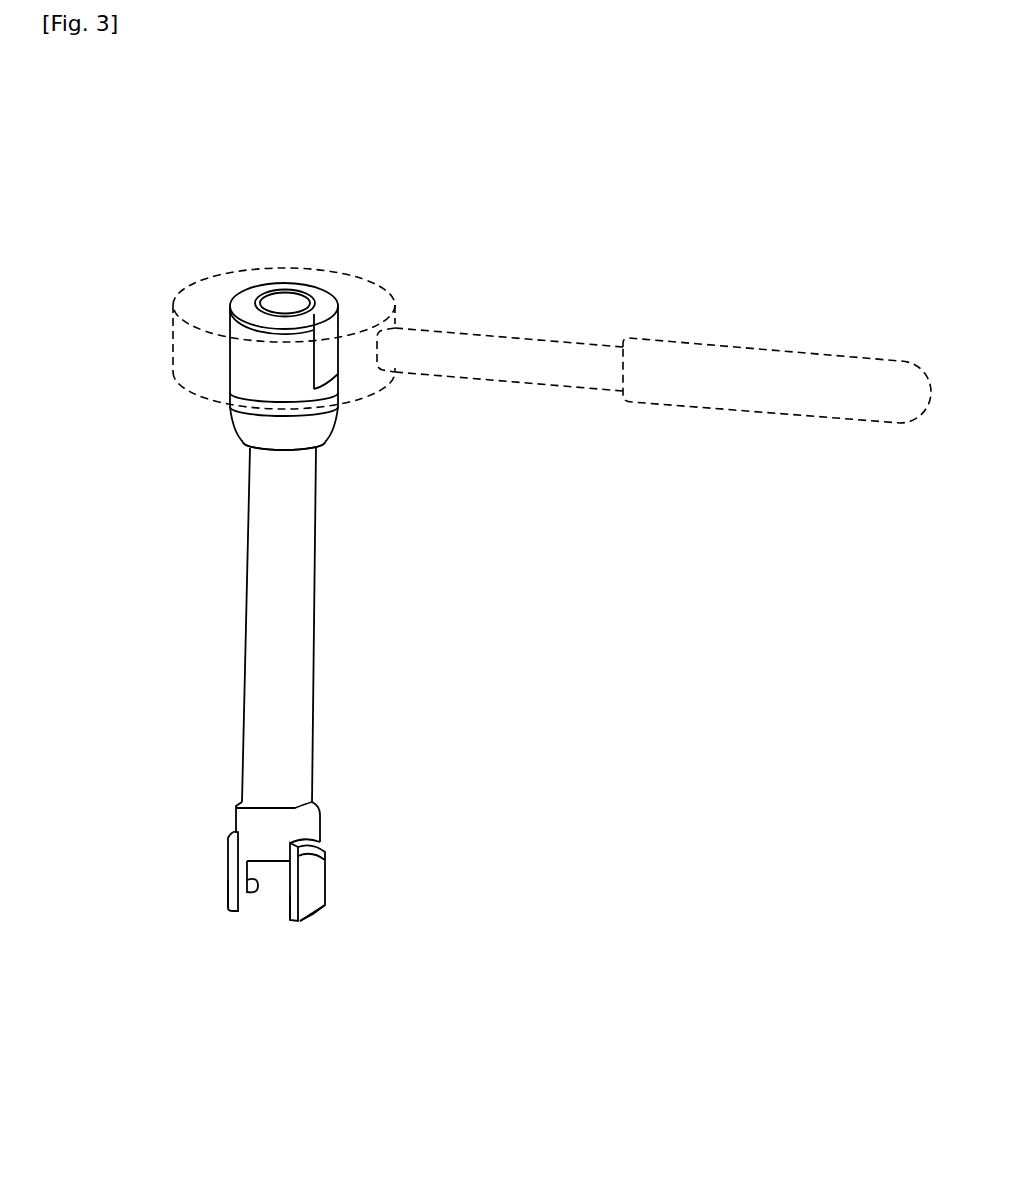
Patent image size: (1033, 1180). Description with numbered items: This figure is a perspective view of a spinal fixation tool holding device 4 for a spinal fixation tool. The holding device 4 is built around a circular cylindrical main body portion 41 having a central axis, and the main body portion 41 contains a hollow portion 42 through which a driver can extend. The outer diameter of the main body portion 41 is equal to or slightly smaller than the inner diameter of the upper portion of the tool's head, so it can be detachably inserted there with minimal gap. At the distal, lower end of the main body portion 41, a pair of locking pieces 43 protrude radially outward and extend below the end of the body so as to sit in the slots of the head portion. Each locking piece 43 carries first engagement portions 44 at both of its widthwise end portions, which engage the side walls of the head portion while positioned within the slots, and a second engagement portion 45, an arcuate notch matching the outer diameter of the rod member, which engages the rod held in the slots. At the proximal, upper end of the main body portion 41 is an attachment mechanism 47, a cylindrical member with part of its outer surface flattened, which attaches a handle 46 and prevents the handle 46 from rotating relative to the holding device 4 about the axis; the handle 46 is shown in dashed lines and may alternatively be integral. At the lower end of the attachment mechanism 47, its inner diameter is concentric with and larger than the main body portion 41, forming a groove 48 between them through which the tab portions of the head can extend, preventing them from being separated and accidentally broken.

The spinal fixation tool holding device 4 is at (264, 600).
The main body portion 41 is at (260, 647).
The hollow portion 42 is at (284, 307).
The locking pieces 43 is at (227, 866).
The first engagement portions 44 is at (226, 891).
The second engagement portion 45 is at (247, 901).
The handle 46 is at (773, 348).
The attachment mechanism 47 is at (240, 355).
The groove 48 is at (247, 442).